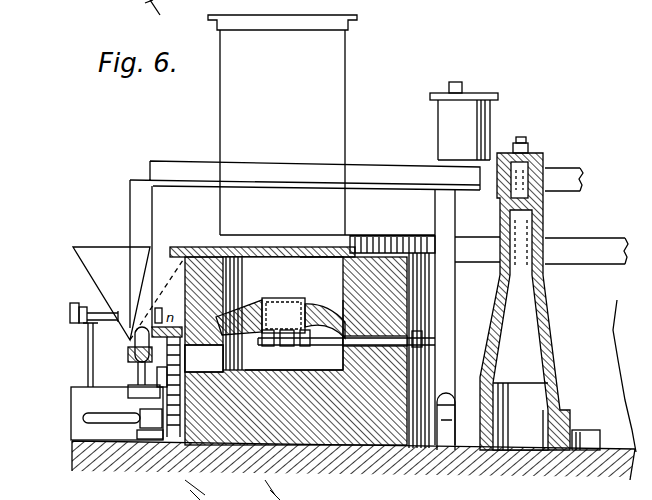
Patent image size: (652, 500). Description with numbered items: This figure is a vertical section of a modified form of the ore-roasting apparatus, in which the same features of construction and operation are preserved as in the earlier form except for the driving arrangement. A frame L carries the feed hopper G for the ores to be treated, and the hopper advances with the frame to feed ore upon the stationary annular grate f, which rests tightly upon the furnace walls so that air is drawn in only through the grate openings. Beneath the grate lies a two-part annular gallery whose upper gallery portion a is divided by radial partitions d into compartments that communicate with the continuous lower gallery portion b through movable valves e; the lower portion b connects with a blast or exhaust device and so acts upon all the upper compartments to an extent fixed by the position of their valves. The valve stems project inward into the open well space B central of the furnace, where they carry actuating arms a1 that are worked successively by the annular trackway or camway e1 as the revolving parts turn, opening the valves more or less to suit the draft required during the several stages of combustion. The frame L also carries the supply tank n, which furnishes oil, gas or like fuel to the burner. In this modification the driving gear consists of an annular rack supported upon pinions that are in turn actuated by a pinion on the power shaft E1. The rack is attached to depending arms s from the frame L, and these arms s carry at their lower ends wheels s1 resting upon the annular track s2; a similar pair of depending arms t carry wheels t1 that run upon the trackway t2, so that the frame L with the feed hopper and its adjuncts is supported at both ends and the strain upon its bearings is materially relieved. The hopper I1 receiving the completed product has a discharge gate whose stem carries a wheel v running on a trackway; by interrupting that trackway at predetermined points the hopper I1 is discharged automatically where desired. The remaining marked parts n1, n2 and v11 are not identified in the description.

The feed hopper G is at (282, 125).
The horizontal beam L is at (379, 204).
The depending arms s is at (141, 254).
The supply tank n is at (359, 167).
The depending arms t is at (445, 317).
The annular trackway or camway e1 is at (519, 293).
The upper gallery portion a is at (299, 347).
The stationary annular grate f is at (321, 271).
The lower gallery portion b is at (294, 361).
The actuating arms a1 is at (321, 335).
The recess n1 is at (204, 358).
The movable valves e is at (280, 318).
The radial partitions d is at (422, 337).
The hopper I1 is at (129, 293).
The wheel v is at (94, 304).
The valve stem v11 is at (81, 354).
The wheels s1 is at (134, 346).
The annular track s2 is at (136, 383).
The power shaft E1 is at (117, 413).
The piston n2 is at (155, 409).
The wheels t1 is at (456, 400).
The trackway t2 is at (586, 429).
The open well space B is at (353, 460).